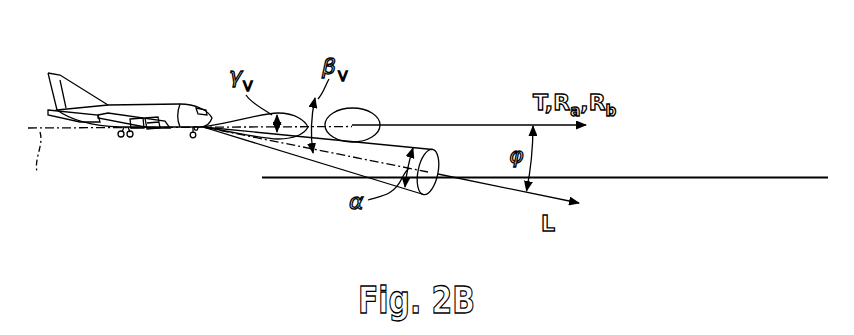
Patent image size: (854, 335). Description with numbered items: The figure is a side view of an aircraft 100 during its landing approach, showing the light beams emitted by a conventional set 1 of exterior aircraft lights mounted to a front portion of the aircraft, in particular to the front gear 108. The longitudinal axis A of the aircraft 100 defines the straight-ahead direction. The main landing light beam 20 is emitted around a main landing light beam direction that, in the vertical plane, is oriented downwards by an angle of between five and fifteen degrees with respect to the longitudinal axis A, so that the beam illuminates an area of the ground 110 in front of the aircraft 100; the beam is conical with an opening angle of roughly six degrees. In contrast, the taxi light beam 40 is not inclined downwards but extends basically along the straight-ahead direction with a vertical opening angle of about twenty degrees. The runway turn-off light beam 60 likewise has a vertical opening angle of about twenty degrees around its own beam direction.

The aircraft 100 is at (150, 98).
The set of exterior aircraft lights 1 is at (201, 142).
The front gear 108 is at (182, 136).
The runway turn-off light beam 60 is at (283, 98).
The taxi light beam 40 is at (380, 98).
The main landing light beam 20 is at (397, 193).
The ground 110 is at (757, 173).
The longitudinal axis A is at (39, 166).